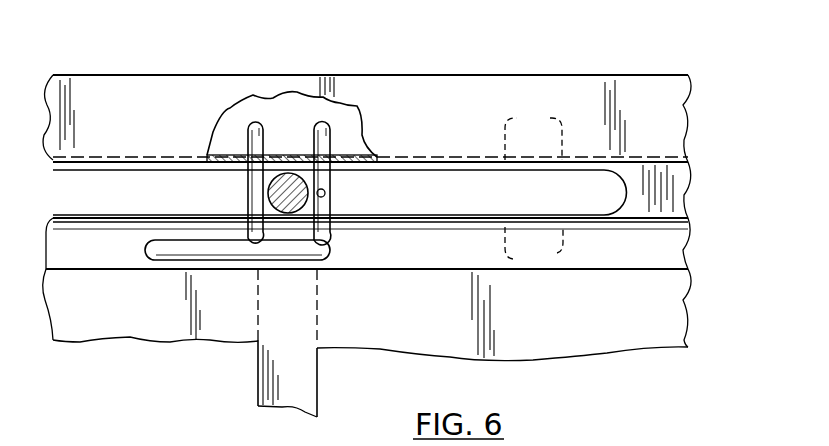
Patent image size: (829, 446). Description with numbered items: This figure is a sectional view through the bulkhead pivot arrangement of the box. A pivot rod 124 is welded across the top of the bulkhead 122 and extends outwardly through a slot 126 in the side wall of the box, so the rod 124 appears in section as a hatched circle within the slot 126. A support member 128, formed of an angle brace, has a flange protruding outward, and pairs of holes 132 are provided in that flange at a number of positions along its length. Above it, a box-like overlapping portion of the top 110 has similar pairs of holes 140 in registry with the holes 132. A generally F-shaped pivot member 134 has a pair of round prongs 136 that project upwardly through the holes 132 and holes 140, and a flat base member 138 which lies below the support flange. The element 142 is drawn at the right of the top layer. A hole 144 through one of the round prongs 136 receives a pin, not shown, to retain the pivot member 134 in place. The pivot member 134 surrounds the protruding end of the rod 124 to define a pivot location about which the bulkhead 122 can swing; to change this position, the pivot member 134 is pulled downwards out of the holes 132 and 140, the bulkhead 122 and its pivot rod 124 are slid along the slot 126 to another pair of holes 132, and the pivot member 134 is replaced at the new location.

The top 110 is at (337, 77).
The bulkhead 122 is at (258, 368).
The pivot rod 124 is at (289, 173).
The slot 126 is at (141, 216).
The support member 128 is at (452, 275).
The holes 132 is at (534, 246).
The pivot member 134 is at (177, 278).
The round prongs 136 is at (249, 131).
The flat base member 138 is at (331, 248).
The holes 140 is at (533, 133).
The top plate 142 is at (670, 122).
The hole 144 is at (326, 192).